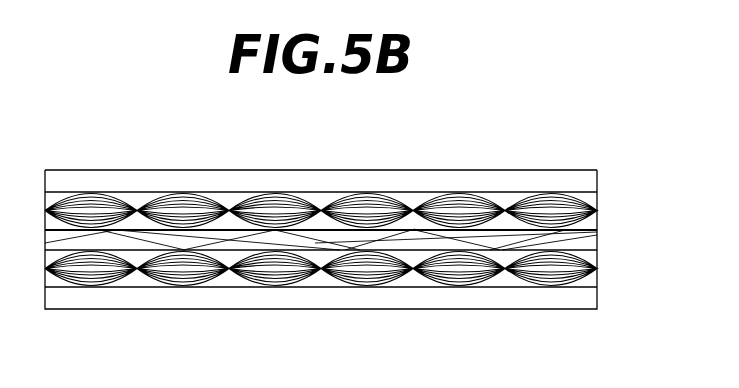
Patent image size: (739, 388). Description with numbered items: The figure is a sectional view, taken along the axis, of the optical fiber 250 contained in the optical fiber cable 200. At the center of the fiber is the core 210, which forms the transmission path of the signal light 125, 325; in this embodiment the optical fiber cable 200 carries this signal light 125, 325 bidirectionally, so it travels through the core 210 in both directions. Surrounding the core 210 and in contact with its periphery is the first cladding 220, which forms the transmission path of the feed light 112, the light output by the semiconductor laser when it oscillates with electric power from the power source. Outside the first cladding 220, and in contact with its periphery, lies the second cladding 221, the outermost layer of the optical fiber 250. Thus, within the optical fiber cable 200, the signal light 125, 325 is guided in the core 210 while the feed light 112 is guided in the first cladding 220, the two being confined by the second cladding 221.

The optical fiber cable 200 is at (308, 135).
The optical fiber 250 is at (382, 170).
The second cladding 221 is at (483, 178).
The first cladding 220 is at (589, 222).
The core 210 is at (353, 296).
The feed light 112 is at (252, 200).
The signal light 125 is at (229, 244).
The signal light 325 is at (321, 300).